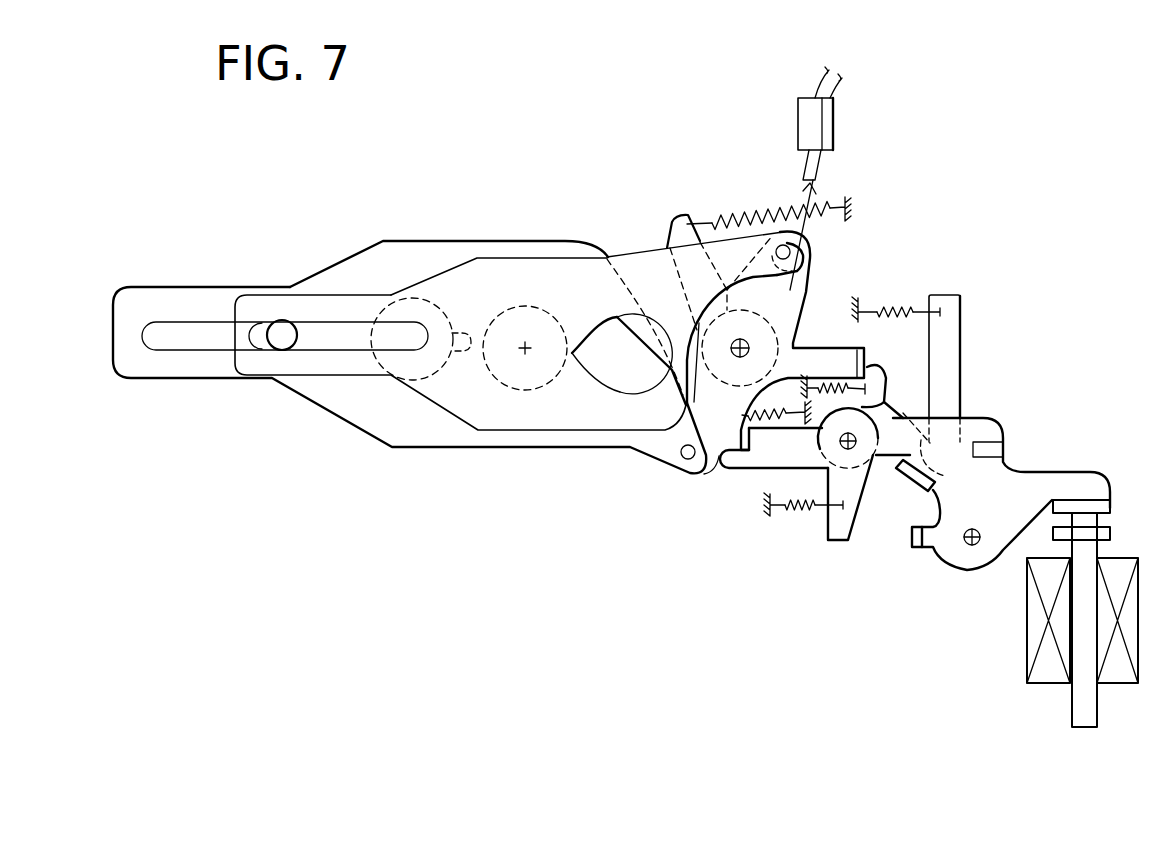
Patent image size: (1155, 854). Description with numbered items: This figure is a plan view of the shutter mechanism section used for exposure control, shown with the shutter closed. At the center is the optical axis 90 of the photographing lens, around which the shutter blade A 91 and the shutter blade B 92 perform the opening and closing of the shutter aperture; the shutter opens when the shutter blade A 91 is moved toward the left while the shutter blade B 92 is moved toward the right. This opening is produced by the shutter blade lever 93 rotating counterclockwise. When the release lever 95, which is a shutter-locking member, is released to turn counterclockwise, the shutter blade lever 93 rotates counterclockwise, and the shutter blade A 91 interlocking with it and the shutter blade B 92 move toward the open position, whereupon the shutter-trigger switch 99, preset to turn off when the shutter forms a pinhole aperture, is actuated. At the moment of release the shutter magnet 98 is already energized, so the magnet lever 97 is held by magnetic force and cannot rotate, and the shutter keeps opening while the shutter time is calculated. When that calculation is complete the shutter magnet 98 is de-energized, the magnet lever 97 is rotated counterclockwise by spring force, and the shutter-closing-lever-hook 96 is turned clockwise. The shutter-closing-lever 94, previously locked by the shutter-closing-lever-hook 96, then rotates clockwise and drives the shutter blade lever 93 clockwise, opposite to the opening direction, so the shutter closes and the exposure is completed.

The optical axis of the photographing lens 90 is at (525, 353).
The shutter blade A 91 is at (636, 270).
The shutter blade B 92 is at (420, 248).
The shutter blade lever 93 is at (803, 291).
The shutter-closing-lever 94 is at (679, 220).
The release lever 95 is at (748, 460).
The shutter-closing-lever-hook 96 is at (887, 383).
The magnet lever 97 is at (947, 346).
The shutter magnet 98 is at (1033, 637).
The shutter-trigger switch 99 is at (820, 166).